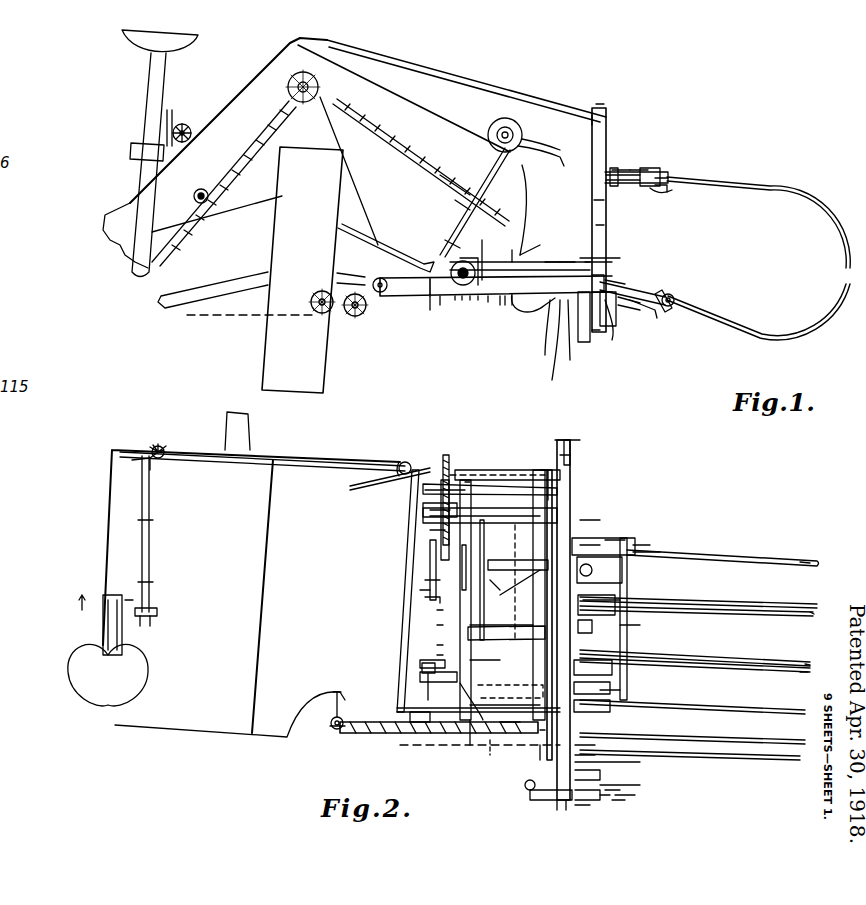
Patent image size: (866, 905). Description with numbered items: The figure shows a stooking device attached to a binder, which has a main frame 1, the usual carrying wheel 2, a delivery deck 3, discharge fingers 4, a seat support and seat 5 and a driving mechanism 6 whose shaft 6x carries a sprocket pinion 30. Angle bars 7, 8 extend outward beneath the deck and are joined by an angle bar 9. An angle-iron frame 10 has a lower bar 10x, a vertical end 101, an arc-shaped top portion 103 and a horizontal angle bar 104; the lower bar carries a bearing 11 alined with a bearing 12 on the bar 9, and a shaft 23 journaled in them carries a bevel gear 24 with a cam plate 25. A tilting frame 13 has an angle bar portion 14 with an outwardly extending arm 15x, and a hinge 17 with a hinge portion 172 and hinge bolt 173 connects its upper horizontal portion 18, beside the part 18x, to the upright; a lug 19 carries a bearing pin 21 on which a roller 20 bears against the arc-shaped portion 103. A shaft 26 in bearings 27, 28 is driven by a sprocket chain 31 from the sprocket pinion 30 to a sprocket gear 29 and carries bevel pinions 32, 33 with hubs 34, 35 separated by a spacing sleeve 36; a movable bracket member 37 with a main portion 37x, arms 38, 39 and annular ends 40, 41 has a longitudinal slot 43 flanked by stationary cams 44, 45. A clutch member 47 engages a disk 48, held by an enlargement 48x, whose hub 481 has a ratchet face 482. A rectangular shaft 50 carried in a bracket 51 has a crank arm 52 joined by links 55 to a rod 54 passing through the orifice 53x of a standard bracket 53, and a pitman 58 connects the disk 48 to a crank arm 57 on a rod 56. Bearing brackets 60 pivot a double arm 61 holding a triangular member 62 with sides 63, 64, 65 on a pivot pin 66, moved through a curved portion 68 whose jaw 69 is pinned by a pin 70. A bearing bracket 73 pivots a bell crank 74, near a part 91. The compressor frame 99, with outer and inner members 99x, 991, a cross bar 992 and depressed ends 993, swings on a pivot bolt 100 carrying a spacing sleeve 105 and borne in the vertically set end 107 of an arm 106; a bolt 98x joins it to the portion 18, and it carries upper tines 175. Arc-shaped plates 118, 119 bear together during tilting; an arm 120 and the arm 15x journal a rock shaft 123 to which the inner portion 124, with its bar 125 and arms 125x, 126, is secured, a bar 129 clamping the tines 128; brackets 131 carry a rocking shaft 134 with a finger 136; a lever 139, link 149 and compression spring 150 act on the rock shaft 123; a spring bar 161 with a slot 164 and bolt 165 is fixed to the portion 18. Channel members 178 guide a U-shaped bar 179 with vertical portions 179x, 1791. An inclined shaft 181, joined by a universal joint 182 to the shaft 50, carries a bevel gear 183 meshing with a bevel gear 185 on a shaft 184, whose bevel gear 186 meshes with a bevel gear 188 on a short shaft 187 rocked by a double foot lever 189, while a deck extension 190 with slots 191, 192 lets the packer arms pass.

In FIG. 1, the carriage bar 1 is at (400, 297).
In FIG. 2, the carriage bar 1 is at (400, 710).
In FIG. 1, the frame member 2 is at (323, 378).
In FIG. 2, the frame member 2 is at (251, 574).
In FIG. 1, the rod 3 is at (450, 182).
In FIG. 1, the pulley arm 4 is at (526, 142).
In FIG. 1, the hand lever 5 is at (158, 100).
In FIG. 1, the sprocket wheel 6 is at (365, 310).
In FIG. 1, the small sprocket 6x is at (376, 282).
In FIG. 2, the small sprocket 6x is at (330, 712).
In FIG. 1, the frame bar 7 is at (430, 300).
In FIG. 2, the frame bar 7 is at (560, 510).
In FIG. 2, the rod 8 is at (505, 733).
In FIG. 1, the shaft 9 is at (488, 300).
In FIG. 2, the shaft 9 is at (483, 720).
In FIG. 1, the post 10 is at (606, 112).
In FIG. 2, the post 10 is at (580, 470).
In FIG. 1, the post part 101 is at (604, 200).
In FIG. 1, the post top 103 is at (600, 108).
In FIG. 2, the post top 103 is at (580, 490).
In FIG. 1, the post part 104 is at (590, 120).
In FIG. 1, the post foot 10x is at (598, 332).
In FIG. 1, the bar 11 is at (605, 260).
In FIG. 2, the bar 11 is at (639, 621).
In FIG. 1, the bar 12 is at (535, 262).
In FIG. 2, the bar 12 is at (506, 642).
In FIG. 1, the bracket 13 is at (615, 327).
In FIG. 2, the bracket 13 is at (600, 545).
In FIG. 2, the plate 14 is at (627, 550).
In FIG. 1, the arm 15x is at (655, 318).
In FIG. 2, the arm 15x is at (625, 540).
In FIG. 2, the bracket 17 is at (590, 800).
In FIG. 2, the bracket 172 is at (600, 776).
In FIG. 2, the bracket 173 is at (610, 795).
In FIG. 2, the plate 18 is at (620, 600).
In FIG. 2, the plate 18x is at (615, 595).
In FIG. 2, the foot 19 is at (560, 805).
In FIG. 2, the base 20 is at (535, 800).
In FIG. 2, the roller 21 is at (530, 790).
In FIG. 1, the bar 23 is at (455, 296).
In FIG. 2, the bar 23 is at (501, 620).
In FIG. 1, the bar 24 is at (470, 300).
In FIG. 2, the bar 24 is at (437, 625).
In FIG. 2, the bar 25 is at (437, 645).
In FIG. 1, the bar 26 is at (462, 258).
In FIG. 2, the bar 26 is at (437, 655).
In FIG. 2, the bracket 27 is at (410, 716).
In FIG. 2, the bar 28 is at (430, 530).
In FIG. 2, the rail 29 is at (420, 745).
In FIG. 2, the roller 30 is at (338, 730).
In FIG. 2, the rail 31 is at (355, 735).
In FIG. 2, the bar 32 is at (417, 677).
In FIG. 1, the bar 33 is at (440, 300).
In FIG. 2, the bar 33 is at (425, 598).
In FIG. 2, the block 34 is at (438, 688).
In FIG. 2, the bar 35 is at (425, 580).
In FIG. 1, the bar 36 is at (462, 300).
In FIG. 2, the bar 36 is at (437, 610).
In FIG. 2, the bar 37 is at (487, 668).
In FIG. 1, the bar 37x is at (512, 250).
In FIG. 2, the bar 37x is at (497, 587).
In FIG. 2, the rod 38 is at (470, 745).
In FIG. 2, the bar 39 is at (454, 566).
In FIG. 2, the block 40 is at (420, 664).
In FIG. 2, the bar 41 is at (420, 590).
In FIG. 1, the link 43 is at (530, 250).
In FIG. 2, the plate 44 is at (505, 714).
In FIG. 2, the arm 45 is at (490, 562).
In FIG. 2, the plate 47 is at (490, 496).
In FIG. 1, the rod 48 is at (445, 240).
In FIG. 2, the rod 48x is at (434, 485).
In FIG. 2, the rod 481 is at (423, 505).
In FIG. 2, the rod 482 is at (430, 512).
In FIG. 2, the plate 50 is at (520, 470).
In FIG. 2, the hook 51 is at (400, 462).
In FIG. 2, the bar 52 is at (448, 488).
In FIG. 1, the rod 53 is at (478, 230).
In FIG. 2, the rod 53 is at (490, 507).
In FIG. 1, the rod 53x is at (445, 230).
In FIG. 1, the joint 54 is at (470, 262).
In FIG. 2, the joint 54 is at (423, 570).
In FIG. 2, the bar 55 is at (468, 482).
In FIG. 1, the hook 56 is at (548, 312).
In FIG. 2, the hook 56 is at (590, 520).
In FIG. 2, the bolt 57 is at (570, 450).
In FIG. 1, the rod 58 is at (541, 344).
In FIG. 2, the rod 58 is at (548, 480).
In FIG. 2, the bar 60 is at (660, 552).
In FIG. 1, the bar 61 is at (610, 256).
In FIG. 2, the bar 61 is at (527, 582).
In FIG. 1, the bar 62 is at (564, 249).
In FIG. 2, the bar 62 is at (510, 683).
In FIG. 1, the bar 63 is at (556, 240).
In FIG. 1, the rod 64 is at (500, 305).
In FIG. 2, the rod 65 is at (540, 730).
In FIG. 1, the bar 66 is at (606, 228).
In FIG. 1, the rod 68 is at (505, 305).
In FIG. 1, the rod 69 is at (512, 305).
In FIG. 1, the rod 70 is at (478, 300).
In FIG. 1, the bracket 73 is at (662, 201).
In FIG. 1, the arm 74 is at (600, 178).
In FIG. 2, the arm 74 is at (566, 455).
In FIG. 1, the clamp 91 is at (650, 170).
In FIG. 1, the rod 98x is at (667, 190).
In FIG. 2, the rod 98x is at (720, 609).
In FIG. 2, the rod 99 is at (640, 660).
In FIG. 1, the rod 991 is at (620, 170).
In FIG. 2, the rod 991 is at (660, 651).
In FIG. 1, the rod 992 is at (640, 170).
In FIG. 2, the rod 992 is at (680, 598).
In FIG. 2, the rod 993 is at (660, 704).
In FIG. 1, the rod 99x is at (668, 176).
In FIG. 2, the bar 100 is at (630, 785).
In FIG. 2, the bracket 105 is at (620, 790).
In FIG. 2, the bracket 106 is at (620, 800).
In FIG. 2, the bracket 107 is at (630, 795).
In FIG. 1, the bracket 118 is at (612, 328).
In FIG. 1, the bracket 119 is at (625, 310).
In FIG. 2, the bar 120 is at (595, 755).
In FIG. 1, the rod 123 is at (674, 300).
In FIG. 2, the rod 123 is at (700, 555).
In FIG. 1, the arm 124 is at (640, 292).
In FIG. 1, the arm 125 is at (615, 282).
In FIG. 2, the arm 125x is at (650, 545).
In FIG. 2, the rod 126 is at (540, 755).
In FIG. 1, the wire 128 is at (748, 341).
In FIG. 2, the wire 128 is at (800, 550).
In FIG. 1, the bracket 129 is at (628, 309).
In FIG. 2, the block 131 is at (592, 686).
In FIG. 1, the block 134 is at (609, 273).
In FIG. 1, the bracket 136 is at (585, 342).
In FIG. 2, the bar 139 is at (595, 745).
In FIG. 2, the bar 149 is at (630, 762).
In FIG. 2, the block 150 is at (592, 704).
In FIG. 2, the bracket 161 is at (585, 805).
In FIG. 2, the rod 164 is at (770, 660).
In FIG. 2, the rod 165 is at (770, 672).
In FIG. 1, the wire 175 is at (800, 192).
In FIG. 2, the wire 175 is at (800, 614).
In FIG. 2, the link 178 is at (520, 590).
In FIG. 1, the block 179 is at (550, 354).
In FIG. 2, the block 179 is at (599, 570).
In FIG. 1, the block 1791 is at (579, 347).
In FIG. 2, the block 1791 is at (603, 534).
In FIG. 2, the block 179x is at (593, 667).
In FIG. 1, the frame 181 is at (244, 204).
In FIG. 2, the frame 181 is at (238, 462).
In FIG. 1, the rod 182 is at (425, 262).
In FIG. 2, the rod 182 is at (361, 484).
In FIG. 2, the star wheel 183 is at (160, 450).
In FIG. 1, the rod 184 is at (195, 124).
In FIG. 2, the rod 184 is at (152, 535).
In FIG. 2, the bracket 185 is at (150, 462).
In FIG. 2, the bracket 186 is at (157, 612).
In FIG. 2, the arm 187 is at (128, 600).
In FIG. 2, the bolt 188 is at (145, 620).
In FIG. 2, the pedal 189 is at (103, 625).
In FIG. 1, the rod 190 is at (534, 206).
In FIG. 2, the rod 190 is at (497, 459).
In FIG. 2, the plate 191 is at (485, 515).
In FIG. 2, the rod 192 is at (490, 755).